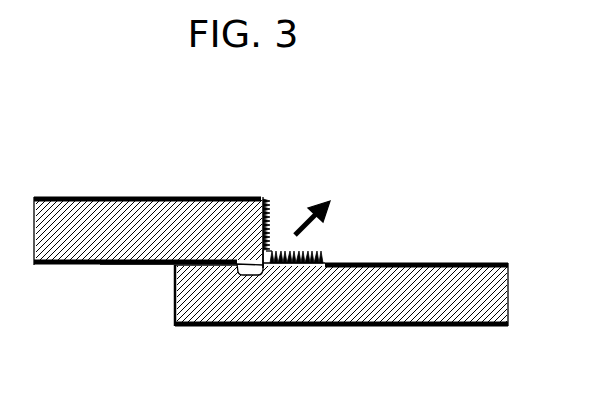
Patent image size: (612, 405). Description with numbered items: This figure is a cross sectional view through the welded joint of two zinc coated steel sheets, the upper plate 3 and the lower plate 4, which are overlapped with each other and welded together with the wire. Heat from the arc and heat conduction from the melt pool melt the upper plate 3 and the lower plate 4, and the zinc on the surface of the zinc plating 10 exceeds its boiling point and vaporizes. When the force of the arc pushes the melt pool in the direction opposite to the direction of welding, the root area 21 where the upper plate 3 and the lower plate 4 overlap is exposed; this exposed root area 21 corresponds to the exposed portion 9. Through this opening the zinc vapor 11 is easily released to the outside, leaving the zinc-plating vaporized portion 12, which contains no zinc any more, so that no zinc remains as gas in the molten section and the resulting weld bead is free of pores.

The upper plate 3 is at (73, 208).
The lower plate 4 is at (463, 290).
The exposed portion 9 is at (266, 251).
The zinc plating 10 is at (118, 264).
The zinc vapor 11 is at (297, 228).
The zinc-plating vaporized portion 12 is at (252, 274).
The root area 21 is at (264, 268).